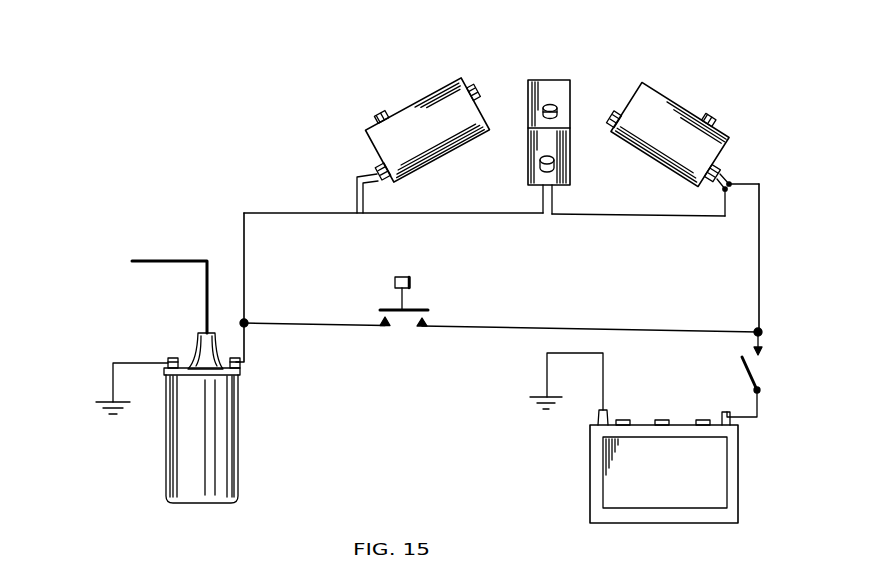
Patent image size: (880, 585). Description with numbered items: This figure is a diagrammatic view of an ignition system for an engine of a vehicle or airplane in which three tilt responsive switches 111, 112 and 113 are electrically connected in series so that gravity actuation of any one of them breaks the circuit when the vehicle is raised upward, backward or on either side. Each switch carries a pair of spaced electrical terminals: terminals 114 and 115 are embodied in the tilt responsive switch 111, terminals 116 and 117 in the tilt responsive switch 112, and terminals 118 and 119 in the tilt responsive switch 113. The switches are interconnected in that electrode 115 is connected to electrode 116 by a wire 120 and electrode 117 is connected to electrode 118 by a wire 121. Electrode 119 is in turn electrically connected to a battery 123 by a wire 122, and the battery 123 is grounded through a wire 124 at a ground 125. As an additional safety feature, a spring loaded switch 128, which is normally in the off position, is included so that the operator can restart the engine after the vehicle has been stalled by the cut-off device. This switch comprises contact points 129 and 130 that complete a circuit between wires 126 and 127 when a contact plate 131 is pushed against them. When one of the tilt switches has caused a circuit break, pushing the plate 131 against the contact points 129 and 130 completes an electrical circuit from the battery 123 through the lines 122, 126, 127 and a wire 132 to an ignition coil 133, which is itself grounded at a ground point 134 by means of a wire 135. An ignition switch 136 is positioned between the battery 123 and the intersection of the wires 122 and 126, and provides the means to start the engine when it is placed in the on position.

The tilt responsive switch 111 is at (437, 82).
The tilt responsive switch 112 is at (571, 80).
The tilt responsive switch 113 is at (664, 92).
The electrical terminal 114 is at (357, 177).
The electrical terminal 115 is at (366, 184).
The electrical terminal 116 is at (542, 190).
The electrical terminal 117 is at (553, 190).
The electrical terminal 118 is at (723, 191).
The electrical terminal 119 is at (732, 183).
The wire 120 is at (456, 216).
The wire 121 is at (620, 218).
The wire 122 is at (760, 302).
The battery 123 is at (590, 476).
The wire 124 is at (546, 368).
The ground 125 is at (545, 412).
The wire 126 is at (535, 327).
The wire 127 is at (300, 322).
The spring loaded switch 128 is at (430, 308).
The contact point 129 is at (415, 328).
The contact point 130 is at (390, 328).
The contact plate 131 is at (385, 307).
The wire 132 is at (246, 262).
The ignition coil 133 is at (239, 463).
The ground point 134 is at (112, 418).
The wire 135 is at (112, 363).
The ignition switch 136 is at (745, 371).